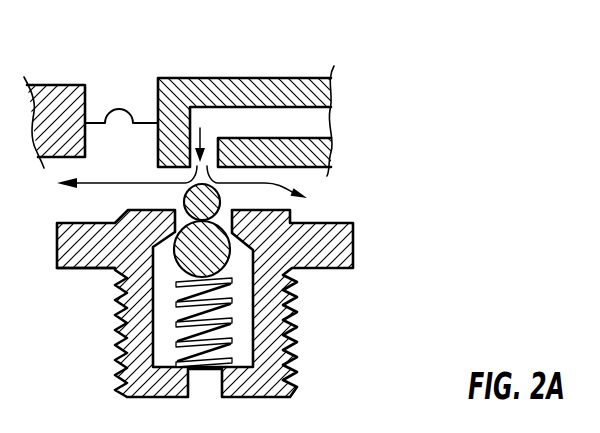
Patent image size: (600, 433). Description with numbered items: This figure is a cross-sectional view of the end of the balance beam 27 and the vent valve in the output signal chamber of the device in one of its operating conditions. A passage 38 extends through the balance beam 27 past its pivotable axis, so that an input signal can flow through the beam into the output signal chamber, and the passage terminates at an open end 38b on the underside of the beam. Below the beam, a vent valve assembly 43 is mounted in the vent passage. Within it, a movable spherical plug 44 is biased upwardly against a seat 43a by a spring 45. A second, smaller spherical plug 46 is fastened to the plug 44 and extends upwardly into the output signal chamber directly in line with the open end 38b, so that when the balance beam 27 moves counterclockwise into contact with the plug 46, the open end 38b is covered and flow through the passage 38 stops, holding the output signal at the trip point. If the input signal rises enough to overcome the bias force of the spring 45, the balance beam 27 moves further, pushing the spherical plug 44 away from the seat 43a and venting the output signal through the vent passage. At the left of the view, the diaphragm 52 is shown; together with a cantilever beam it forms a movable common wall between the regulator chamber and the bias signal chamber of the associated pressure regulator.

The balance beam 27 is at (331, 84).
The passage 38 is at (333, 125).
The open end of passage 38b is at (212, 122).
The vent valve assembly 43 is at (338, 268).
The seat 43a is at (88, 268).
The movable spherical plug 44 is at (217, 250).
The spring 45 is at (235, 344).
The second smaller spherical plug 46 is at (222, 214).
The diaphragm 52 is at (121, 108).